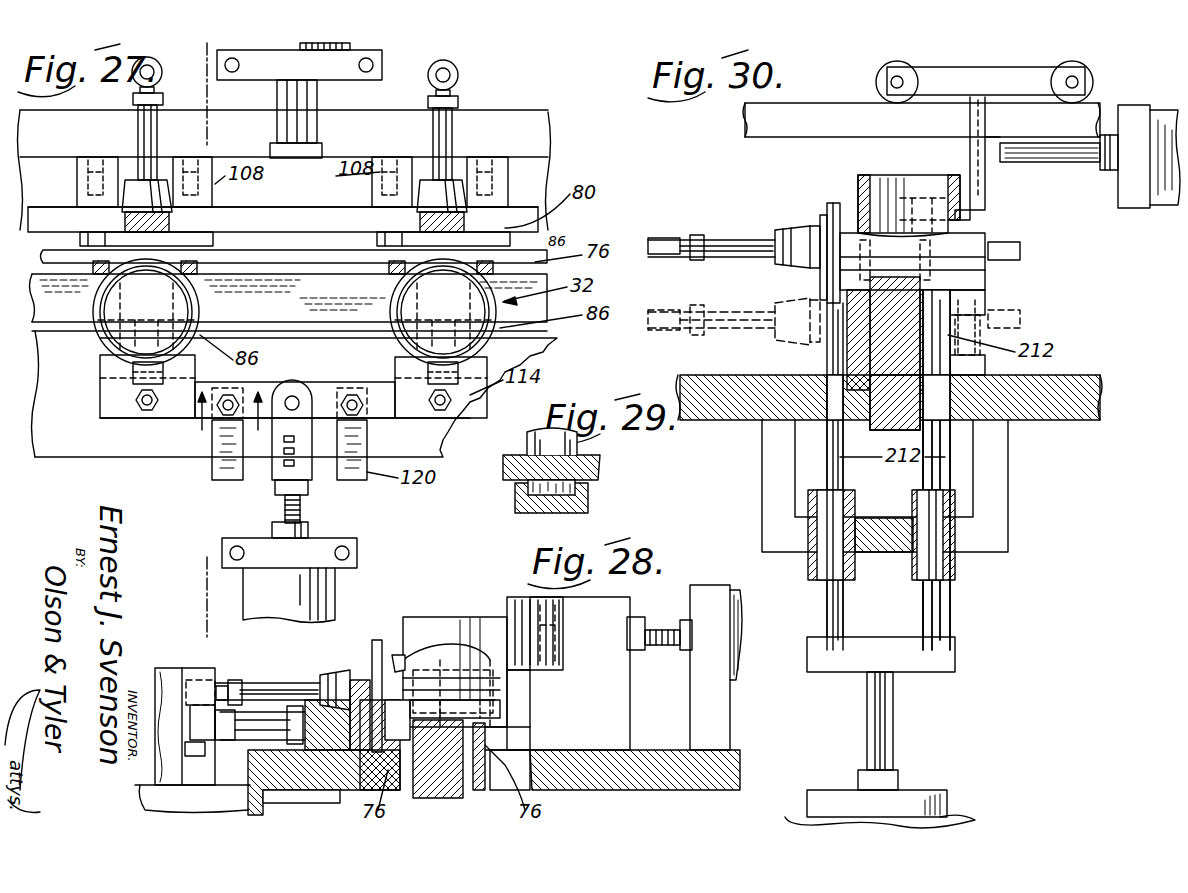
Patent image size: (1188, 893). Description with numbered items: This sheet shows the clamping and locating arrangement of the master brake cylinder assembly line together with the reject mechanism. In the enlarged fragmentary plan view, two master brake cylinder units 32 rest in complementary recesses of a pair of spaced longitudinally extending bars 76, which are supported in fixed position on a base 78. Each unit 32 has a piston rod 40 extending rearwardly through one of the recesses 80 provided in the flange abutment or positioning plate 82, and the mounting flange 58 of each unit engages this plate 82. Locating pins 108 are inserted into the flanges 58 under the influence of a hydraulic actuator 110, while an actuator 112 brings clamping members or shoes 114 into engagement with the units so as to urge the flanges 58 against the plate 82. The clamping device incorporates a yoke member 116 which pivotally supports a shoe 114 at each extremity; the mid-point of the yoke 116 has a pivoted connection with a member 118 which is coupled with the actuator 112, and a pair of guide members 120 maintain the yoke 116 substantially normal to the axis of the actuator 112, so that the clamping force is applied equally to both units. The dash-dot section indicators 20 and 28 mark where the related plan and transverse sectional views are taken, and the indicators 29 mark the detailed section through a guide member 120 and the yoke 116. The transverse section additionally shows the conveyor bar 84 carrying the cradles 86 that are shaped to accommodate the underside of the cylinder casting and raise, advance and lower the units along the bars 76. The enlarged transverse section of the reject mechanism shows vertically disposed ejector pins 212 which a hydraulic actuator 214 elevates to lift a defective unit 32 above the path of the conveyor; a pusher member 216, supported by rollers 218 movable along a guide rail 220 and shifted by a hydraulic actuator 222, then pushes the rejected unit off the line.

In FIG. 27, the section line 20 is at (222, 46).
In FIG. 27, the section line 28 is at (222, 610).
In FIG. 27, the section line 29 is at (225, 420).
In FIG. 27, the master brake cylinder unit 32 is at (205, 305).
In FIG. 28, the master brake cylinder unit 32 is at (420, 612).
In FIG. 30, the master brake cylinder unit 32 is at (820, 195).
In FIG. 27, the piston rod 40 is at (145, 128).
In FIG. 28, the piston rod 40 is at (285, 683).
In FIG. 30, the piston rod 40 is at (740, 240).
In FIG. 27, the mounting flange 58 is at (235, 232).
In FIG. 28, the mounting flange 58 is at (380, 640).
In FIG. 30, the mounting flange 58 is at (835, 203).
In FIG. 27, the longitudinally extending bars 76 is at (42, 330).
In FIG. 28, the longitudinally extending bars 76 is at (405, 660).
In FIG. 30, the longitudinally extending bars 76 is at (848, 300).
In FIG. 27, the base 78 is at (545, 363).
In FIG. 28, the base 78 is at (250, 772).
In FIG. 27, the recesses 80 is at (175, 225).
In FIG. 27, the positioning plate 82 is at (328, 218).
In FIG. 28, the conveyor bar 84 is at (430, 790).
In FIG. 27, the cradles 86 is at (212, 258).
In FIG. 28, the cradles 86 is at (440, 775).
In FIG. 30, the cradles 86 is at (912, 285).
In FIG. 27, the locating pins 108 is at (80, 184).
In FIG. 27, the hydraulic actuator 110 is at (356, 50).
In FIG. 28, the hydraulic actuator 110 is at (175, 670).
In FIG. 27, the actuator 112 is at (318, 590).
In FIG. 28, the actuator 112 is at (735, 638).
In FIG. 27, the clamping members 114 is at (108, 412).
In FIG. 27, the yoke member 116 is at (326, 386).
In FIG. 29, the yoke member 116 is at (600, 470).
In FIG. 27, the member 118 is at (300, 470).
In FIG. 28, the member 118 is at (620, 607).
In FIG. 27, the guide members 120 is at (213, 476).
In FIG. 29, the guide members 120 is at (590, 498).
In FIG. 30, the ejector pins 212 is at (828, 355).
In FIG. 30, the hydraulic actuator 214 is at (958, 818).
In FIG. 30, the pusher member 216 is at (1005, 188).
In FIG. 30, the rollers 218 is at (1060, 68).
In FIG. 30, the guide rail 220 is at (745, 127).
In FIG. 30, the hydraulic actuator 222 is at (1162, 198).